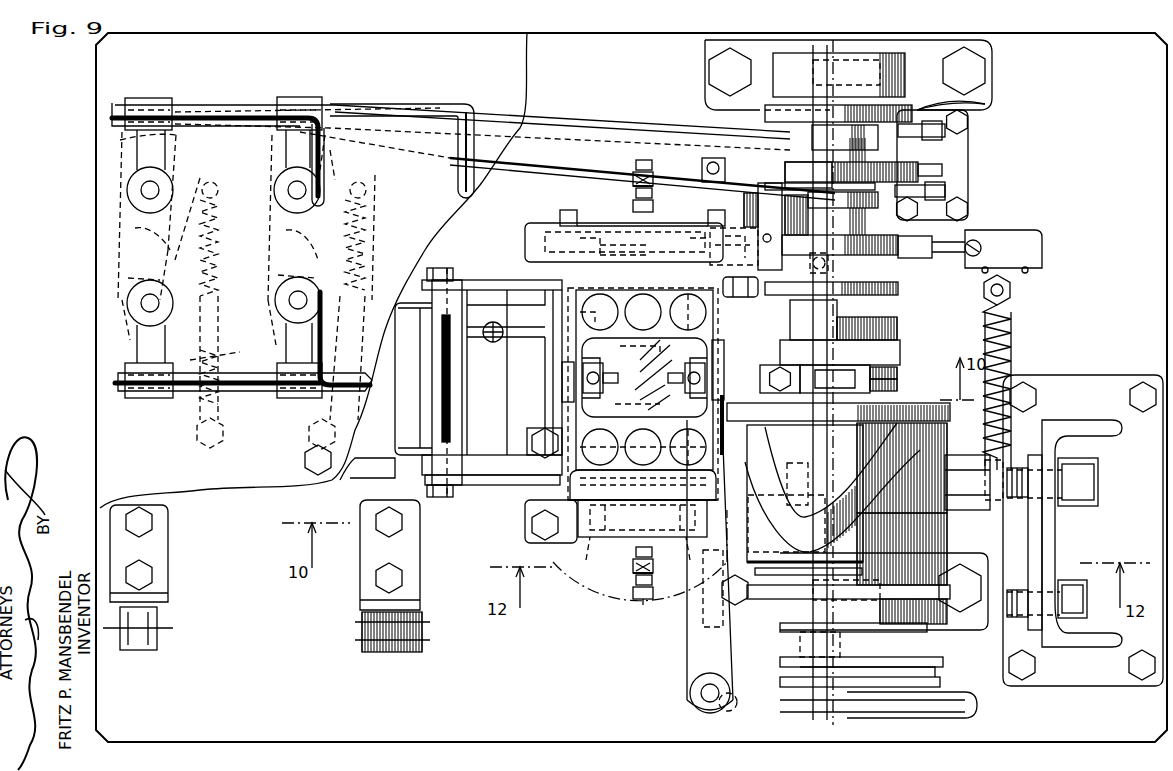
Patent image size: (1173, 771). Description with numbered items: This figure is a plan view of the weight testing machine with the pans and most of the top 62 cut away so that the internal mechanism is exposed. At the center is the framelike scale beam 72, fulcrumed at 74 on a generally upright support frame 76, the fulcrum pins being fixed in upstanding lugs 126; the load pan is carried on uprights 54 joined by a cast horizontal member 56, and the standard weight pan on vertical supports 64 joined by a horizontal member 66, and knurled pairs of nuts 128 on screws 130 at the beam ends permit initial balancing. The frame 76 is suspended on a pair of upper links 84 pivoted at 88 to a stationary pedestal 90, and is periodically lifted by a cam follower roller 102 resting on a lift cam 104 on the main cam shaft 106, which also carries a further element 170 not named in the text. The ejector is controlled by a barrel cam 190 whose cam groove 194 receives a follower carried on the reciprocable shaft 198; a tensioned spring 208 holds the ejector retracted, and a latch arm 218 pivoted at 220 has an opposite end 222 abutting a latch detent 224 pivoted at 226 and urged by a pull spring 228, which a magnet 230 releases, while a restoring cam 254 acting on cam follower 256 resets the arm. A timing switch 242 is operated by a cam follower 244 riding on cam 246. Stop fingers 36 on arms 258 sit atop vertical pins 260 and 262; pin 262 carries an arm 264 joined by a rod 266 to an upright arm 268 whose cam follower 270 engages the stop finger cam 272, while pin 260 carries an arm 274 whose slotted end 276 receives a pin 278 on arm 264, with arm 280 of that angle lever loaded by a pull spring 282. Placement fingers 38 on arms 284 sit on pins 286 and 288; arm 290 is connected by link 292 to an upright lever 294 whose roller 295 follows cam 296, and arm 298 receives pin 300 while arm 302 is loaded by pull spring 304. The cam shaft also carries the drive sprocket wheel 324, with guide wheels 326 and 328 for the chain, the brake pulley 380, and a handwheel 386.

The top 62 is at (420, 55).
The arms 258 is at (158, 100).
The arms 284 is at (302, 98).
The rod 266 is at (210, 135).
The arm 264 is at (112, 166).
The vertical pin 260 is at (148, 190).
The arm 274 is at (120, 227).
The slotted end 276 is at (120, 268).
The vertical pin 262 is at (148, 303).
The arm 280 is at (198, 315).
The pin 278 is at (185, 230).
The arm 290 is at (275, 172).
The vertical pin 286 is at (295, 192).
The arm 298 is at (276, 232).
The pin 300 is at (282, 266).
The vertical pin 288 is at (296, 300).
The stop fingers 36 is at (322, 168).
The pull spring 282 is at (226, 360).
The link 292 is at (380, 150).
The arm 302 is at (335, 328).
The pull spring 304 is at (368, 226).
The placement fingers 38 is at (462, 182).
The stationary pedestal 90 is at (366, 460).
The pivotal connection 88 is at (440, 267).
The upper links 84 is at (485, 287).
The shaft 198 is at (525, 492).
The horizontal member 56 is at (540, 247).
The uprights 54 is at (570, 226).
The opposite end of latch arm 222 is at (685, 255).
The nuts 128 is at (636, 186).
The screws 130 is at (640, 163).
The magnet 230 is at (760, 185).
The pull spring 228 is at (766, 210).
The latch detent 224 is at (735, 249).
The pivot 226 is at (771, 241).
The cam follower 256 is at (738, 298).
The scale beam 72 is at (570, 420).
The support frame 76 is at (630, 352).
The fulcrum pins 74 is at (663, 376).
The upstanding lugs 126 is at (600, 393).
The cam groove 194 is at (751, 464).
The cam follower 270 is at (985, 112).
The stop finger cam 272 is at (990, 108).
The upright arm 268 is at (950, 130).
The cam 296 is at (942, 170).
The cam follower roller 295 is at (945, 180).
The upright lever 294 is at (946, 193).
The timing switch 242 is at (1005, 242).
The cam 246 is at (900, 260).
The cam follower 244 is at (928, 258).
The restoring cam 254 is at (893, 292).
The collar 170 is at (897, 328).
The cam follower roller 102 is at (897, 370).
The lift cam 104 is at (897, 384).
The tensioned spring 208 is at (1012, 342).
The barrel cam 190 is at (935, 530).
The sprocket wheel 324 is at (925, 633).
The pulley 380 is at (940, 672).
The handwheel 386 is at (978, 707).
The main cam shaft 106 is at (848, 718).
The latch arm 218 is at (692, 645).
The pivot 220 is at (702, 696).
The guide sprocket 326 is at (170, 630).
The guide sprocket 328 is at (358, 630).
The vertical supports 64 is at (631, 560).
The horizontal member 66 is at (628, 537).